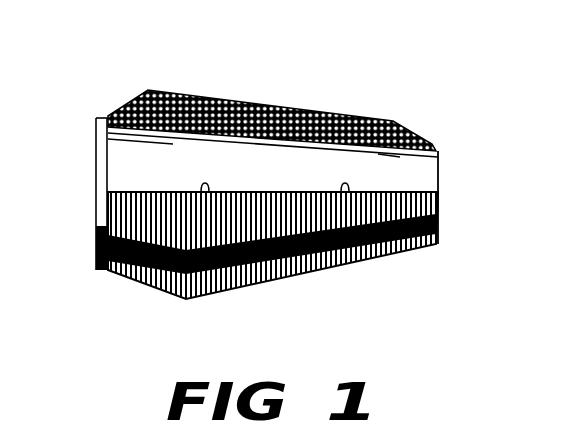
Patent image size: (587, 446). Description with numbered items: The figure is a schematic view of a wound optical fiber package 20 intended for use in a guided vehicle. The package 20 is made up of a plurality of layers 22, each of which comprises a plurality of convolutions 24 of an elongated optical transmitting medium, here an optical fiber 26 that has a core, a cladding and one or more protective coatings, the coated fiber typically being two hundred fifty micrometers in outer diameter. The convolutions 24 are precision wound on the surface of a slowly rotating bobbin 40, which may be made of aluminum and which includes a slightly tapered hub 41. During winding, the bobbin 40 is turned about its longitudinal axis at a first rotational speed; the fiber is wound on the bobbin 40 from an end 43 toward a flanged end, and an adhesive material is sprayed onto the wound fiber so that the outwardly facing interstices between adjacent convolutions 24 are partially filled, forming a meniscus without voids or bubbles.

The optical fiber package 20 is at (273, 182).
The layers 22 is at (428, 131).
The convolutions 24 is at (413, 243).
The optical fiber 26 is at (257, 98).
The bobbin 40 is at (87, 130).
The hub 41 is at (107, 165).
The end 43 is at (430, 212).